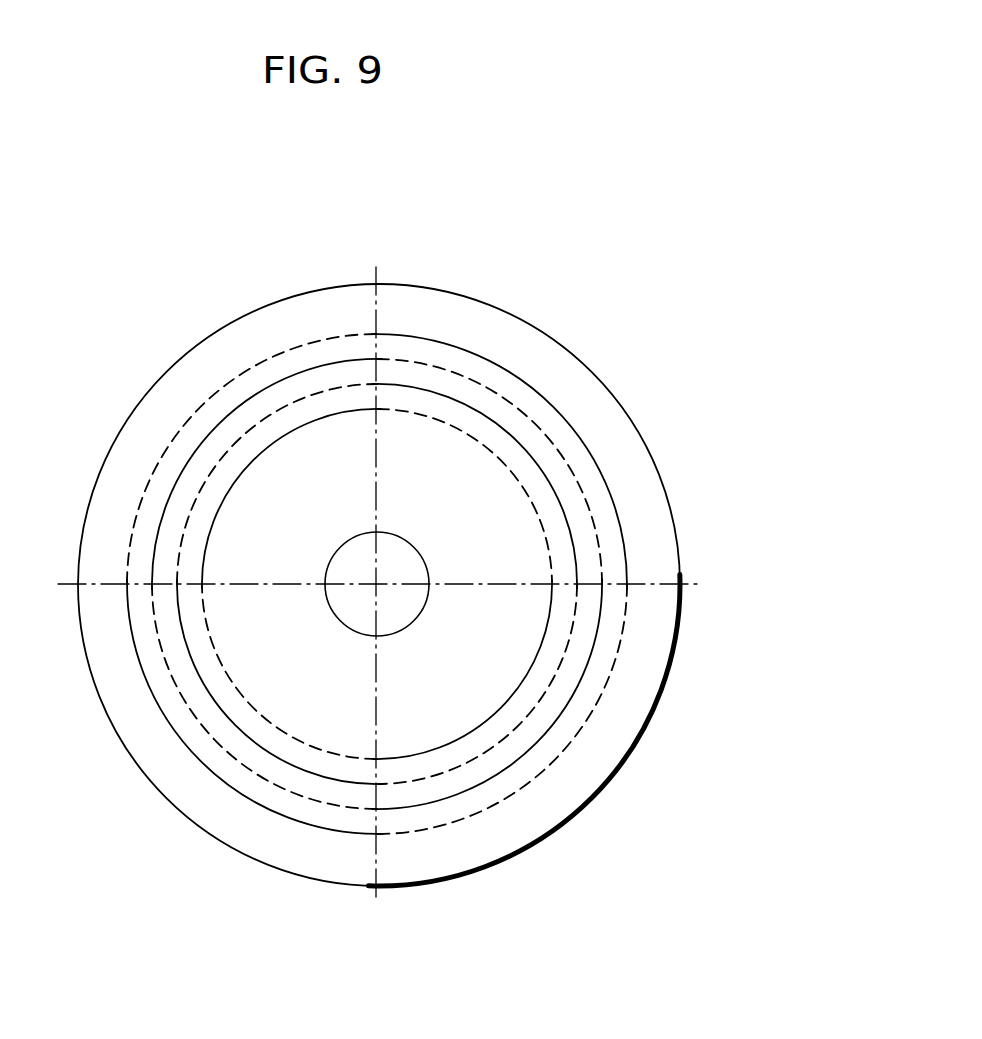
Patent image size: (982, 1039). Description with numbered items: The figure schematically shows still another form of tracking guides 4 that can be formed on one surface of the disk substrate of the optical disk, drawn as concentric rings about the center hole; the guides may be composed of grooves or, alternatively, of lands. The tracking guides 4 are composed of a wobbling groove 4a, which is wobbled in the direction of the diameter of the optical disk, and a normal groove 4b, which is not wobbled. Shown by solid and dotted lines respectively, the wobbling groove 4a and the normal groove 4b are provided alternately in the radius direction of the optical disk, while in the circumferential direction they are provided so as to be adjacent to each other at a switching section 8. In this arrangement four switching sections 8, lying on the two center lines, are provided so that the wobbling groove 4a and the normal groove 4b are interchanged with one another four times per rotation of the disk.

The switching section 8 is at (375, 316).
The tracking guides 4 is at (500, 575).
The wobbling groove 4a is at (577, 482).
The normal groove 4b is at (562, 412).